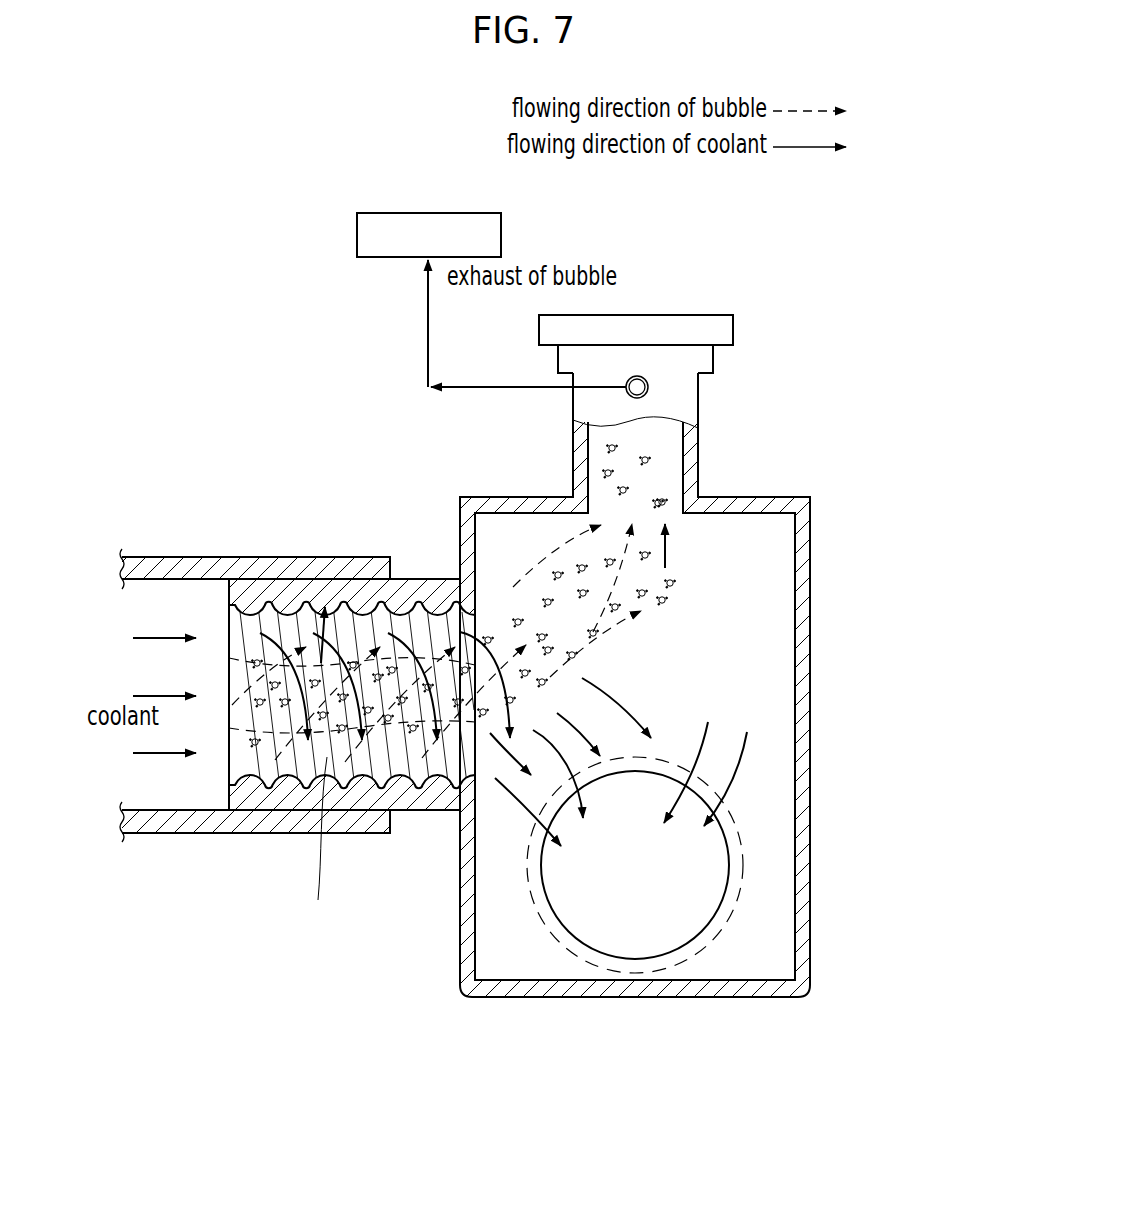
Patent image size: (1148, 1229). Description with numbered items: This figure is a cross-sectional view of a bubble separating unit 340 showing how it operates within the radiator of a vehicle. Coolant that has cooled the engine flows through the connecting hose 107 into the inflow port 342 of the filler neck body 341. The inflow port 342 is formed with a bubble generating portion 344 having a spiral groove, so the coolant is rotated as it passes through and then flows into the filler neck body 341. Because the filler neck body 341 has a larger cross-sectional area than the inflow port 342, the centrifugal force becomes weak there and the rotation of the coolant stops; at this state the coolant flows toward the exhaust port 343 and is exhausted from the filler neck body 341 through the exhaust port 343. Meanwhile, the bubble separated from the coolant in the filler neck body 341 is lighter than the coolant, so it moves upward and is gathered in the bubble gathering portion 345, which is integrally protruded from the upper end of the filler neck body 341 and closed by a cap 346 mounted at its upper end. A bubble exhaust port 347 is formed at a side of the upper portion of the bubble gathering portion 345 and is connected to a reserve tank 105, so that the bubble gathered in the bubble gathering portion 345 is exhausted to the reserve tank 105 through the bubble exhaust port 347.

The reserve tank 105 is at (428, 213).
The connecting hose 107 is at (170, 573).
The bubble separating unit 340 is at (445, 466).
The filler neck body 341 is at (803, 818).
The inflow port 342 is at (428, 590).
The exhaust port 343 is at (723, 927).
The bubble generating portion 344 is at (317, 662).
The bubble gathering portion 345 is at (690, 443).
The cap 346 is at (720, 328).
The bubble exhaust port 347 is at (647, 380).